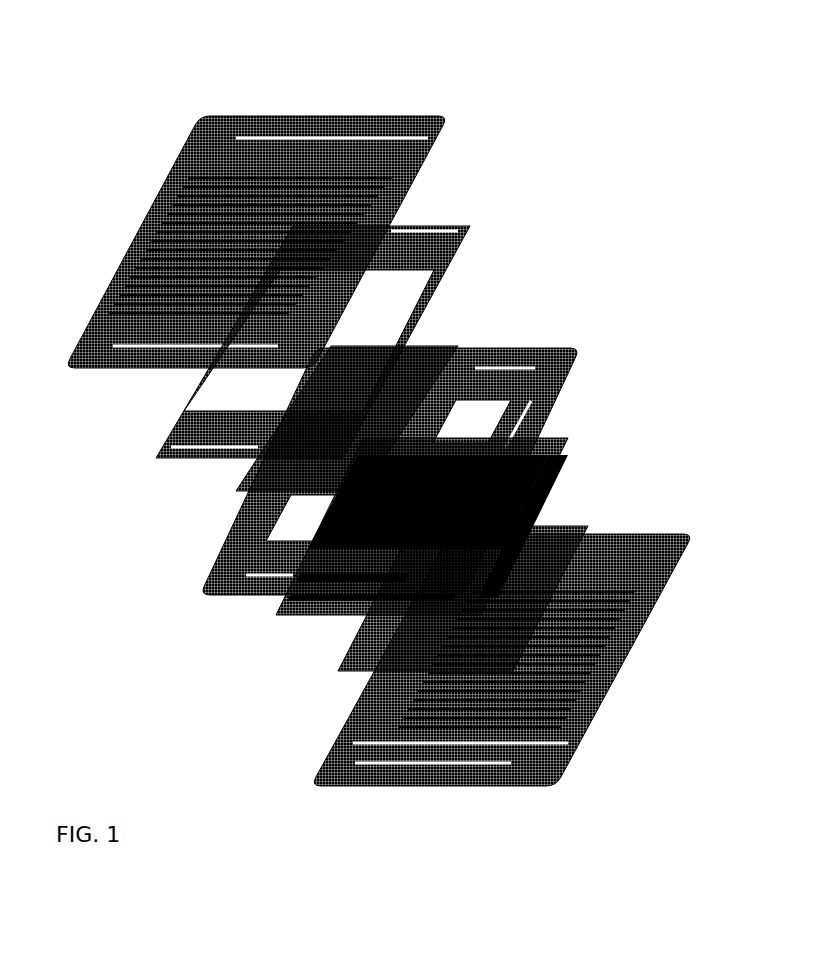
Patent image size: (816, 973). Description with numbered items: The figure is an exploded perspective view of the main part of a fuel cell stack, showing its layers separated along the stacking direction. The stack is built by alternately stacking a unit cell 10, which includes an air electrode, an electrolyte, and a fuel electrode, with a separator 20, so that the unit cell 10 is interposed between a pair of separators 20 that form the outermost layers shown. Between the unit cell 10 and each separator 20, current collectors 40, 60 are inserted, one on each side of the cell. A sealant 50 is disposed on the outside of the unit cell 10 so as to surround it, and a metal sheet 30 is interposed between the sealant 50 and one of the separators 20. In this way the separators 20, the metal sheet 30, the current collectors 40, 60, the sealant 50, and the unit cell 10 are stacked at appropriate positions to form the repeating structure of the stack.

The unit cell 10 is at (547, 463).
The separator 20 is at (300, 110).
The metal sheet 30 is at (461, 218).
The current collector 40 is at (447, 338).
The sealant 50 is at (543, 402).
The current collector 60 is at (564, 517).